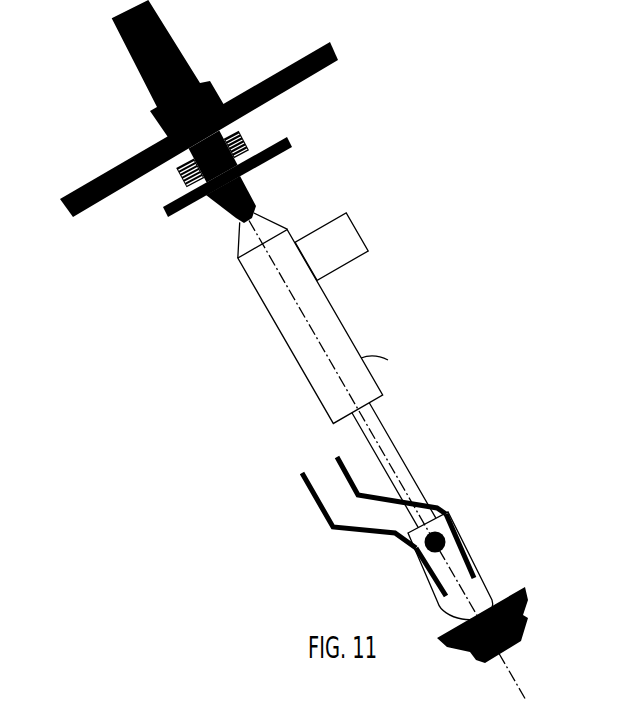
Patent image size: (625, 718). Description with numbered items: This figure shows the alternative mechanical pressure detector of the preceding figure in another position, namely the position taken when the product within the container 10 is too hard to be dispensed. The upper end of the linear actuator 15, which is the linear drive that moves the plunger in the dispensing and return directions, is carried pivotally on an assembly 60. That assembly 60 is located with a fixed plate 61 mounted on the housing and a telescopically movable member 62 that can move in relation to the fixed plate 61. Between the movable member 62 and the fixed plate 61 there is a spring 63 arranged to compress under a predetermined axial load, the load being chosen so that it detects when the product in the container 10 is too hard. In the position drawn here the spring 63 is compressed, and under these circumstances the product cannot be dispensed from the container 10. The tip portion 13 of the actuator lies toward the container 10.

The container 10 is at (457, 672).
The probe tip portion 13 is at (475, 543).
The drive mechanism 15 is at (411, 443).
The assembly 60 is at (199, 147).
The fixed plate 61 is at (108, 172).
The telescopically movable member 62 is at (130, 67).
The spring 63 is at (241, 138).